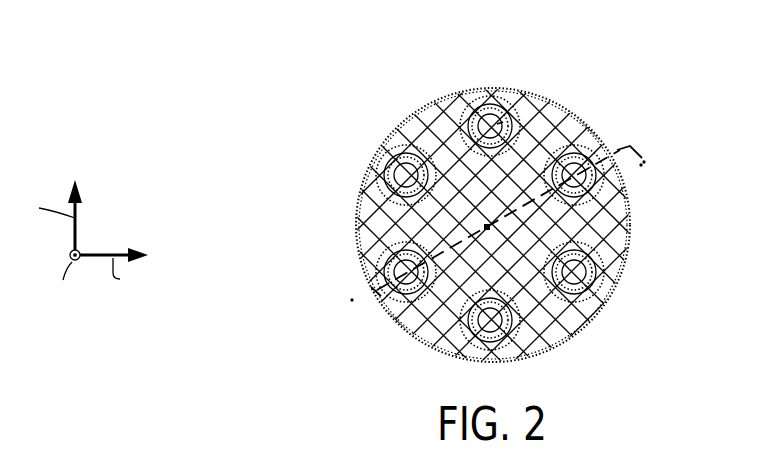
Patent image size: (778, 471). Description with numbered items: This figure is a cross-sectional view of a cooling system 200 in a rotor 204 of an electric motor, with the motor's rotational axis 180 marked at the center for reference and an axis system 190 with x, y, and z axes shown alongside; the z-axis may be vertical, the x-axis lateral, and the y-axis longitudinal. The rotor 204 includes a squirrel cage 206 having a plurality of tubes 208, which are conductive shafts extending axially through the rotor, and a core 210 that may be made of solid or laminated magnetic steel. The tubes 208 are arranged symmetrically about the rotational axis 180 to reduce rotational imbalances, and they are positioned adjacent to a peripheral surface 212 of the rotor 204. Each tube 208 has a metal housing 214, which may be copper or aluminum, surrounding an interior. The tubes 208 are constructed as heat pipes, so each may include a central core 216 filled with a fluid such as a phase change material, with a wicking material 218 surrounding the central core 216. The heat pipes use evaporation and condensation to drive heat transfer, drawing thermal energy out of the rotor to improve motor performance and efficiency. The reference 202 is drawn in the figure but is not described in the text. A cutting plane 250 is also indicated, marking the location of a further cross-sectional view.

The rotational axis 180 is at (484, 227).
The axis system 190 is at (120, 210).
The cooling system 200 is at (660, 150).
The housing 202 is at (679, 97).
The rotor 204 is at (630, 38).
The squirrel cage 206 is at (366, 127).
The tubes 208 is at (450, 110).
The core 210 is at (503, 197).
The peripheral surface 212 is at (565, 108).
The metal housing 214 is at (499, 100).
The central core 216 is at (482, 118).
The wicking material 218 is at (503, 122).
The cutting plane 250 is at (346, 333).